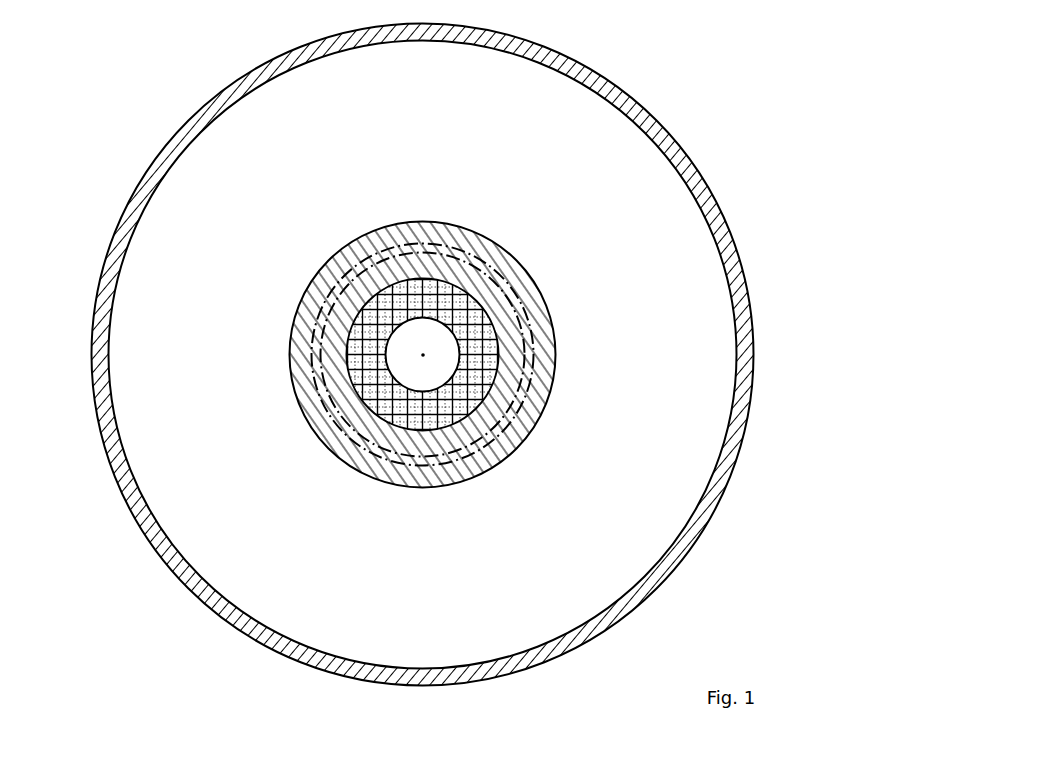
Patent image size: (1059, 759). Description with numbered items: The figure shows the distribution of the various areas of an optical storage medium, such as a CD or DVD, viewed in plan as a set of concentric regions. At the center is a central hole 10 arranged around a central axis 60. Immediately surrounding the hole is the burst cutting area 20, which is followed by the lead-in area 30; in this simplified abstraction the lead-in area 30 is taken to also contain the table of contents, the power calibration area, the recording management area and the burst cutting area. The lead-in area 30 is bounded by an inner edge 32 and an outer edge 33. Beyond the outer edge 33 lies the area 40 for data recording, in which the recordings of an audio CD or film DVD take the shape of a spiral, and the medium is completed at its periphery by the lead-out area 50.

The central hole 10 is at (442, 368).
The burst cutting area 20 is at (487, 365).
The lead-in area 30 is at (493, 318).
The inner edge of the lead-in area 32 is at (500, 333).
The outer edge of the lead-in area 33 is at (555, 333).
The area for data recording 40 is at (638, 155).
The lead-out area 50 is at (635, 102).
The central axis 60 is at (420, 362).